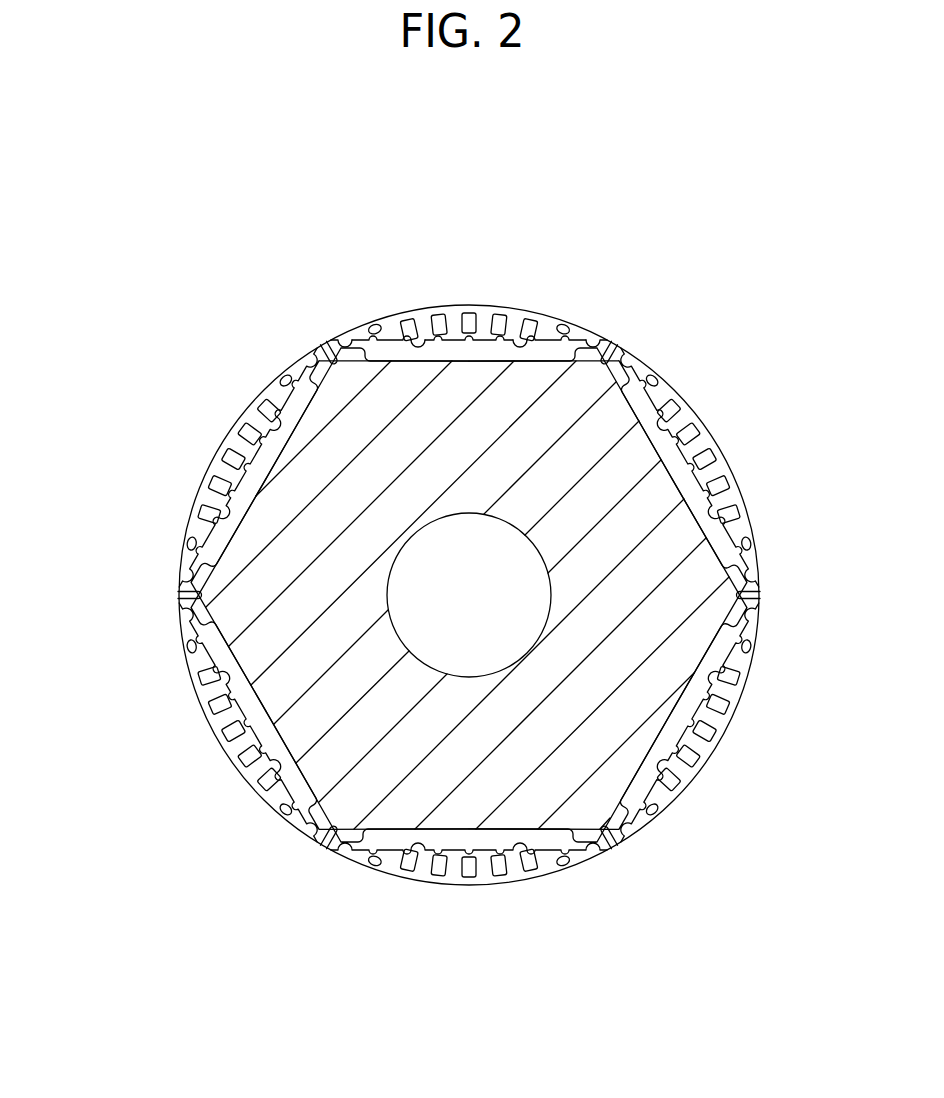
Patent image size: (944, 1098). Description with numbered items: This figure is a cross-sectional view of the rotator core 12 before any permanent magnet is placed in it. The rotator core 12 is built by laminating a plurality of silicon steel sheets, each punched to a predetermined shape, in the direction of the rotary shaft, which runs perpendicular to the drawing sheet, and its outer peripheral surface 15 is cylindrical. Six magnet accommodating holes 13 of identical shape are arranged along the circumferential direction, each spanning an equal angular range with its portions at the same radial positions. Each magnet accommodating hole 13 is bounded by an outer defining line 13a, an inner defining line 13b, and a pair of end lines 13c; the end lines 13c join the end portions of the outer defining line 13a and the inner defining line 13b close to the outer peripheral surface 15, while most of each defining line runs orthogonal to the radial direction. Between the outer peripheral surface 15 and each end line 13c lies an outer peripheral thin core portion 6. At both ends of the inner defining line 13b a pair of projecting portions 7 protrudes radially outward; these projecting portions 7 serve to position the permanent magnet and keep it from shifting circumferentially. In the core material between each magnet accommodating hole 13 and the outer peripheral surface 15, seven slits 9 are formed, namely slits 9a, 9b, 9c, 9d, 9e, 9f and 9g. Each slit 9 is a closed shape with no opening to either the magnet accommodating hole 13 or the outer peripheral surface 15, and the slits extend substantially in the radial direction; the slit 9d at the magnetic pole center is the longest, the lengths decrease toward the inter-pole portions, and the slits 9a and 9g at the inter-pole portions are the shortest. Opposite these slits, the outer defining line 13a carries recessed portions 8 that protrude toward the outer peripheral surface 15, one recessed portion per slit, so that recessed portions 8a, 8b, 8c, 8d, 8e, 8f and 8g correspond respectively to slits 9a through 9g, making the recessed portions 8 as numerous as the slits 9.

The rotator core 12 is at (211, 251).
The outer peripheral thin core portion 6 is at (308, 355).
The projecting portion 7 is at (200, 604).
The magnet accommodating hole 13 is at (487, 597).
The outer defining line 13a is at (520, 345).
The inner defining line 13b is at (410, 358).
The end line 13c is at (340, 339).
The outer peripheral surface 15 is at (214, 457).
The recessed portion 8 is at (764, 411).
The recessed portion 8a is at (655, 378).
The recessed portion 8b is at (664, 404).
The recessed portion 8c is at (682, 436).
The recessed portion 8d is at (700, 462).
The recessed portion 8e is at (718, 485).
The recessed portion 8f is at (737, 512).
The recessed portion 8g is at (782, 529).
The slit 9 is at (773, 767).
The slit 9a is at (745, 650).
The slit 9b is at (734, 681).
The slit 9c is at (720, 709).
The slit 9d is at (704, 733).
The slit 9e is at (690, 757).
The slit 9f is at (674, 783).
The slit 9g is at (684, 836).